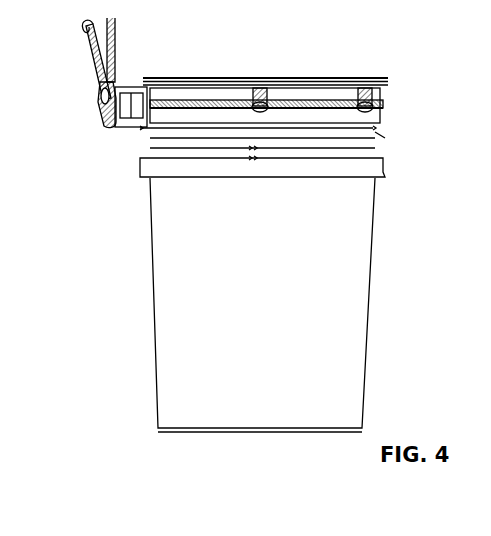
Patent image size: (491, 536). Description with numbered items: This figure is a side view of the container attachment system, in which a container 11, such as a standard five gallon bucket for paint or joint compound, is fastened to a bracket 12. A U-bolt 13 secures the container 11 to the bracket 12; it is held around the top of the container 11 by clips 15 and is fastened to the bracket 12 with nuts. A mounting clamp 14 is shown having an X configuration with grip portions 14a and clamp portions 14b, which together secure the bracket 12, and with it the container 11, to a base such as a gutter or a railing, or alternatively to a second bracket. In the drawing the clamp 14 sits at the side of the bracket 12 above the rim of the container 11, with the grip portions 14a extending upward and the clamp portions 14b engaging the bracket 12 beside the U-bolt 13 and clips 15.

The container 11 is at (154, 296).
The bracket 12 is at (128, 120).
The U-bolt 13 is at (327, 110).
The mounting clamp 14 is at (127, 50).
The grip portion 14a is at (84, 37).
The clamp portion 14b is at (98, 111).
The clip 15 is at (263, 105).